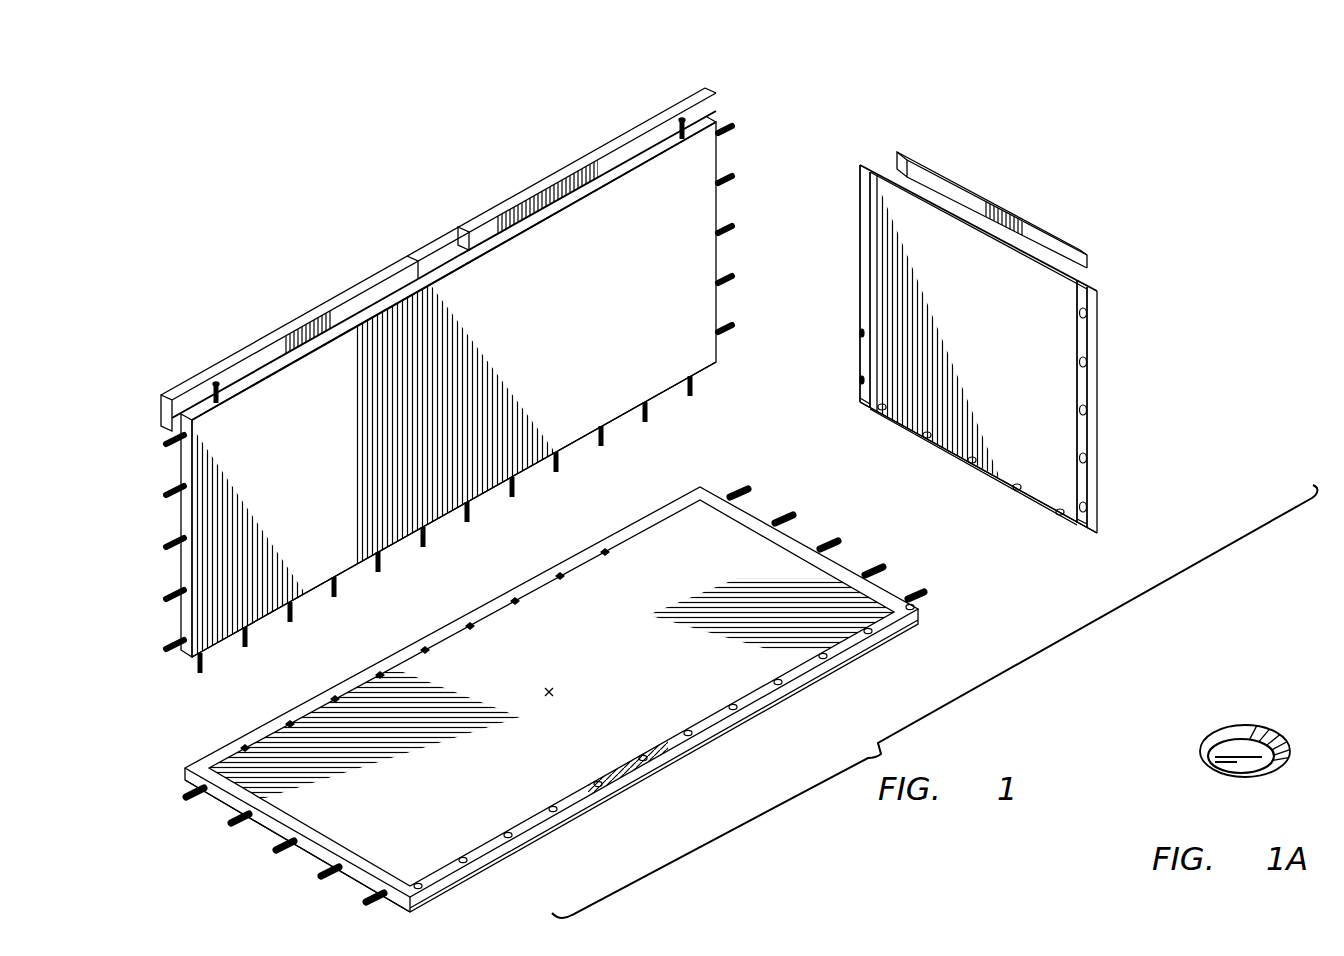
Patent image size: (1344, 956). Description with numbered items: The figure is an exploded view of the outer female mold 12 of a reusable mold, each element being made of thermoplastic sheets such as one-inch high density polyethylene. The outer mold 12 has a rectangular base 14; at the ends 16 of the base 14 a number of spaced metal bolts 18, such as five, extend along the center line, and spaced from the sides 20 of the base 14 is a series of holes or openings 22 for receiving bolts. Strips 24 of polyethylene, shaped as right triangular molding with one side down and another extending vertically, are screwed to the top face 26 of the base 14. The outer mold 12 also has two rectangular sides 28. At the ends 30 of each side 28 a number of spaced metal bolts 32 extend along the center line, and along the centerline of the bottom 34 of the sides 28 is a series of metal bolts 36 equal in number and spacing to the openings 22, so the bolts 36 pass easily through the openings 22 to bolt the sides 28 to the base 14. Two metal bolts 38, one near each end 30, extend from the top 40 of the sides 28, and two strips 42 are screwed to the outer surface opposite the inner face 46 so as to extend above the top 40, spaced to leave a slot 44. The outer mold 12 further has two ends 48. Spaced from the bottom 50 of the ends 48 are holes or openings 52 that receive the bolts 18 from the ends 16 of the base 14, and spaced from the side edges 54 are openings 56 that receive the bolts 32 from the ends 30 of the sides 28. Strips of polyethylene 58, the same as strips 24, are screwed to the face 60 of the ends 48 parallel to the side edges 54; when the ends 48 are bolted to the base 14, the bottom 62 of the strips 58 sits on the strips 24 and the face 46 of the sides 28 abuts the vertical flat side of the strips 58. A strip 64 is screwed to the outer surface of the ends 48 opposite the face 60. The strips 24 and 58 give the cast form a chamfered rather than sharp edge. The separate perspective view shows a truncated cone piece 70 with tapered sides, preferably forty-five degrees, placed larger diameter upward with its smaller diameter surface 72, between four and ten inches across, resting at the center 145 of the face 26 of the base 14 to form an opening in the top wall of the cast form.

In FIG. 1, the outer female mold 12 is at (306, 188).
In FIG. 1, the rectangular base 14 is at (606, 584).
In FIG. 1, the ends of the base 16 is at (265, 832).
In FIG. 1, the metal bolts 18 is at (870, 570).
In FIG. 1, the sides of the base 20 is at (430, 642).
In FIG. 1, the holes or openings 22 is at (285, 714).
In FIG. 1, the strips 24 is at (362, 674).
In FIG. 1, the top face of the base 26 is at (445, 815).
In FIG. 1, the rectangular sides 28 is at (672, 226).
In FIG. 1, the ends of the side 30 is at (180, 498).
In FIG. 1, the metal bolts 32 is at (738, 284).
In FIG. 1, the bottom of the sides 34 is at (630, 412).
In FIG. 1, the metal bolts 36 is at (386, 566).
In FIG. 1, the metal bolts 38 is at (212, 390).
In FIG. 1, the top of the sides 40 is at (630, 166).
In FIG. 1, the strips 42 is at (352, 304).
In FIG. 1, the slot 44 is at (456, 243).
In FIG. 1, the inner surface or face of the side 46 is at (360, 441).
In FIG. 1, the ends 48 is at (1020, 286).
In FIG. 1, the bottom of ends 50 is at (1030, 510).
In FIG. 1, the holes or openings 52 is at (1016, 492).
In FIG. 1, the side edges 54 is at (862, 312).
In FIG. 1, the holes or openings 56 is at (866, 240).
In FIG. 1, the strips of polyethylene 58 is at (868, 368).
In FIG. 1, the face of the ends 60 is at (1020, 367).
In FIG. 1, the bottom of the strips 62 is at (868, 406).
In FIG. 1, the strip 64 is at (968, 192).
In FIG. 1A, the truncated cone piece 70 is at (1204, 748).
In FIG. 1A, the smaller diameter surface 72 is at (1218, 770).
In FIG. 1, the center of face 145 is at (552, 688).